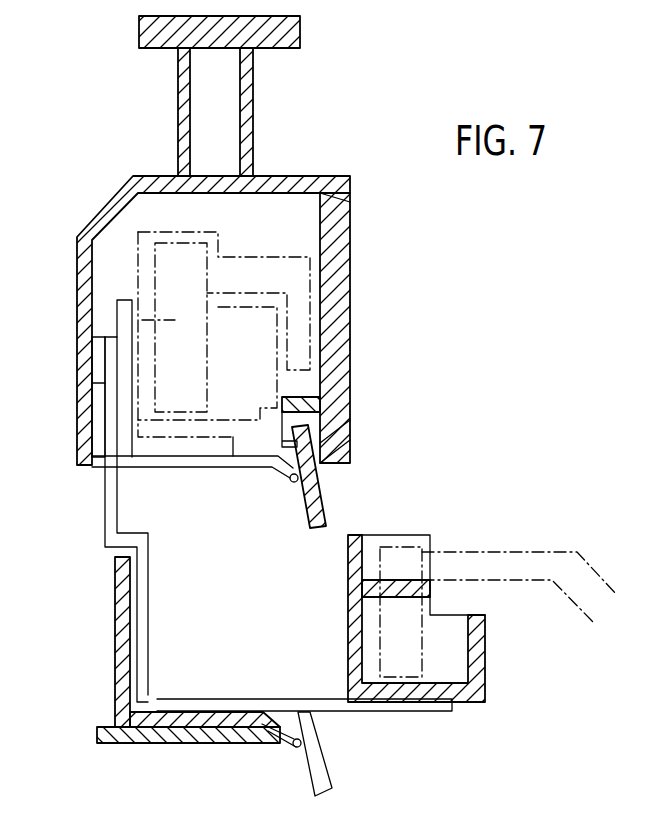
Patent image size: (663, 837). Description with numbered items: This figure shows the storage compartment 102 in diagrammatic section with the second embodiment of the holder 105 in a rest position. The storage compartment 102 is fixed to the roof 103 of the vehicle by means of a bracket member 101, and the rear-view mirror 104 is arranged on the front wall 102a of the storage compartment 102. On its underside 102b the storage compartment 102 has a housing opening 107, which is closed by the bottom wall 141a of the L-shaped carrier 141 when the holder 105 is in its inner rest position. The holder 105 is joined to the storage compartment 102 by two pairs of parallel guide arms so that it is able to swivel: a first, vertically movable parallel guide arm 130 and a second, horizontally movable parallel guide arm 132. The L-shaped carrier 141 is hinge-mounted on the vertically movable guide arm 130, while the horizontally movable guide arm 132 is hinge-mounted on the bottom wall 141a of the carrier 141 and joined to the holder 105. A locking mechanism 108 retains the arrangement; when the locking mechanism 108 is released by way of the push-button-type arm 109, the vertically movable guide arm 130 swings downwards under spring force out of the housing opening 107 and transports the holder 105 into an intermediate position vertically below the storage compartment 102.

The bracket member 101 is at (252, 118).
The storage compartment 102 is at (110, 213).
The front wall 102a is at (350, 193).
The underside 102b is at (338, 463).
The roof 103 is at (158, 45).
The rear-view mirror 104 is at (342, 310).
The holder 105 is at (487, 702).
The housing opening 107 is at (207, 470).
The locking mechanism 108 is at (303, 423).
The push-button-type arm 109 is at (323, 502).
The parallel guide arm 130 is at (103, 512).
The parallel guide arm 132 is at (347, 712).
The carrier 141 is at (117, 653).
The bottom wall 141a is at (190, 747).